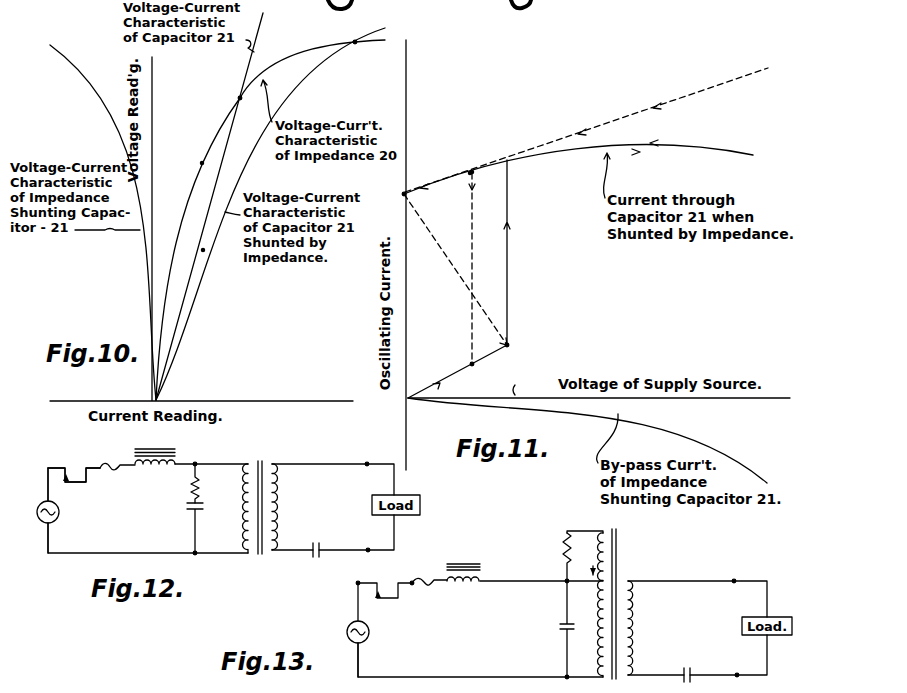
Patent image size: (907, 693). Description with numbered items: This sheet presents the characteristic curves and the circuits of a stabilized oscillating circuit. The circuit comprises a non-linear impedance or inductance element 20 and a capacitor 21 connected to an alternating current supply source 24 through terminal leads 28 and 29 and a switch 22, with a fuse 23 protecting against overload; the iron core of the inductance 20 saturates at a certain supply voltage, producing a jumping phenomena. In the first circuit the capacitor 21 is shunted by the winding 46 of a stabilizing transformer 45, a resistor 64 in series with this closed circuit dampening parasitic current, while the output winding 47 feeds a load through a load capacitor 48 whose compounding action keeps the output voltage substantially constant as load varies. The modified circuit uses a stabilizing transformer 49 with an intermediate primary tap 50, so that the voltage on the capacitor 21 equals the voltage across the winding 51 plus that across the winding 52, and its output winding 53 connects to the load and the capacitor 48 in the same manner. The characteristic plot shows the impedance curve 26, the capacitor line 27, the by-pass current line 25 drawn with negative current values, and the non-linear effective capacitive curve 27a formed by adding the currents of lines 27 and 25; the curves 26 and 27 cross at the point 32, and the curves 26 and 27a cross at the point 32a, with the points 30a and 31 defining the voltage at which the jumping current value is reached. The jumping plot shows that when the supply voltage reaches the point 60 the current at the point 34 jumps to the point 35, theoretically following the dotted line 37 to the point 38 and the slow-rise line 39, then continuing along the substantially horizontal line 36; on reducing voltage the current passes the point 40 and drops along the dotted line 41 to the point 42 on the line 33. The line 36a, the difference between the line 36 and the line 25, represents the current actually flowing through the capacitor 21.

In FIG. 12, the non-linear impedance or inductance element 20 is at (170, 452).
In FIG. 13, the non-linear impedance or inductance element 20 is at (467, 564).
In FIG. 12, the capacitor 21 is at (188, 509).
In FIG. 13, the capacitor 21 is at (566, 629).
In FIG. 12, the switch 22 is at (60, 466).
In FIG. 13, the switch 22 is at (360, 583).
In FIG. 12, the fuse 23 is at (107, 465).
In FIG. 13, the fuse 23 is at (428, 580).
In FIG. 12, the alternating current supply source 24 is at (60, 512).
In FIG. 13, the alternating current supply source 24 is at (348, 630).
In FIG. 10, the by-pass current line 25 is at (99, 101).
In FIG. 11, the by-pass current line 25 is at (700, 447).
In FIG. 10, the voltage-current characteristic of the impedance 26 is at (222, 125).
In FIG. 10, the voltage-current characteristic of the capacitor 27 is at (230, 133).
In FIG. 10, the non-linear effective capacitive curve 27a is at (290, 94).
In FIG. 12, the terminal lead 28 is at (46, 480).
In FIG. 13, the terminal lead 28 is at (357, 596).
In FIG. 12, the terminal lead 29 is at (50, 546).
In FIG. 13, the terminal lead 29 is at (357, 669).
In FIG. 10, the point on effective capacitive curve 30a is at (203, 250).
In FIG. 10, the point on impedance curve 31 is at (202, 163).
In FIG. 10, the crossing point of curves 26 and 27 32 is at (240, 98).
In FIG. 10, the crossing point of curves 26 and 27a 32a is at (355, 42).
In FIG. 11, the lower current line 33 is at (455, 378).
In FIG. 11, the jumping point 34 is at (511, 347).
In FIG. 11, the post-jump current point 35 is at (507, 160).
In FIG. 11, the oscillating current line 36 is at (687, 98).
In FIG. 11, the capacitor current line 36a is at (709, 145).
In FIG. 11, the dotted current-rise line 37 is at (447, 271).
In FIG. 11, the current point at curve crossing 38 is at (424, 178).
In FIG. 11, the slow-rise dotted line 39 is at (470, 173).
In FIG. 11, the drop-off point 40 is at (473, 172).
In FIG. 11, the dotted current-drop line 41 is at (472, 240).
In FIG. 11, the point on line 33 42 is at (471, 364).
In FIG. 12, the stabilizing transformer 45 is at (260, 461).
In FIG. 12, the winding of the stabilizing transformer 46 is at (244, 516).
In FIG. 12, the output winding 47 is at (276, 490).
In FIG. 12, the load capacitor 48 is at (319, 547).
In FIG. 13, the load capacitor 48 is at (691, 668).
In FIG. 13, the stabilizing transformer 49 is at (618, 549).
In FIG. 13, the intermediate primary tap 50 is at (594, 568).
In FIG. 13, the winding 51 is at (602, 609).
In FIG. 13, the winding 52 is at (602, 535).
In FIG. 13, the output winding 53 is at (633, 622).
In FIG. 11, the supply voltage point 60 is at (526, 385).
In FIG. 12, the resistor 64 is at (192, 488).
In FIG. 13, the resistor 64 is at (565, 557).